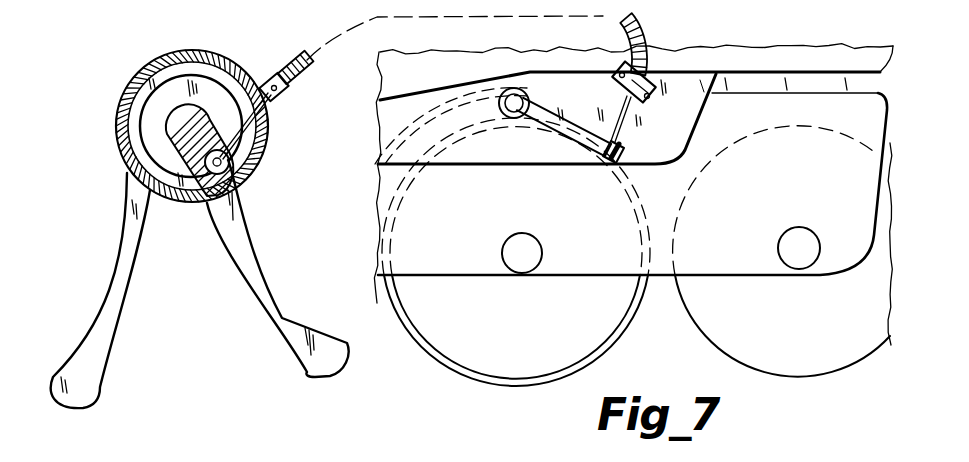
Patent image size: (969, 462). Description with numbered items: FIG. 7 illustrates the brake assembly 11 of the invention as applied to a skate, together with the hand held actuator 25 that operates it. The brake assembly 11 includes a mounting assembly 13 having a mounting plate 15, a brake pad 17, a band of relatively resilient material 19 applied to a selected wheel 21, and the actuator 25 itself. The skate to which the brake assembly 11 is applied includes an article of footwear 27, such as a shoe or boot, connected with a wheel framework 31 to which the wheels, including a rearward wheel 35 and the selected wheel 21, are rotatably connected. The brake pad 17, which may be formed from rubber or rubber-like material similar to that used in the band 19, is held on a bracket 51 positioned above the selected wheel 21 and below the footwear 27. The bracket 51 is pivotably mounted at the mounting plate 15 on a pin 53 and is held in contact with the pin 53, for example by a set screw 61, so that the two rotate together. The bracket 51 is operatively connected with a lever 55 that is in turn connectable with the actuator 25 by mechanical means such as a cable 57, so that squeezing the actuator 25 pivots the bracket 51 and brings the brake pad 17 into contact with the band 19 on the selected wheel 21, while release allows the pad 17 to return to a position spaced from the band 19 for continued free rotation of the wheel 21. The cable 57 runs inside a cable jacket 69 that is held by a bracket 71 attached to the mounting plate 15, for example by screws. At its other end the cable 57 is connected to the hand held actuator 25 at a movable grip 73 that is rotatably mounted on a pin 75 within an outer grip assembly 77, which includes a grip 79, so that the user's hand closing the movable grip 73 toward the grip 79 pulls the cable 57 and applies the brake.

The brake assembly 11 is at (148, 44).
The mounting assembly 13 is at (700, 168).
The mounting plate 15 is at (704, 100).
The brake pad 17 is at (433, 133).
The relatively resilient material band 19 is at (415, 328).
The selected wheel 21 is at (448, 332).
The actuator 25 is at (126, 90).
The footwear 27 is at (856, 50).
The wheel framework 31 is at (807, 110).
The rearward wheel 35 is at (722, 337).
The bracket 51 is at (463, 95).
The pin 53 is at (528, 96).
The lever 55 is at (588, 133).
The cable 57 is at (267, 116).
The set screw 61 is at (455, 30).
The cable jacket 69 is at (680, 12).
The bracket 71 is at (651, 100).
The movable grip 73 is at (253, 250).
The pin 75 is at (178, 149).
The outer grip assembly 77 is at (200, 50).
The grip 79 is at (118, 298).